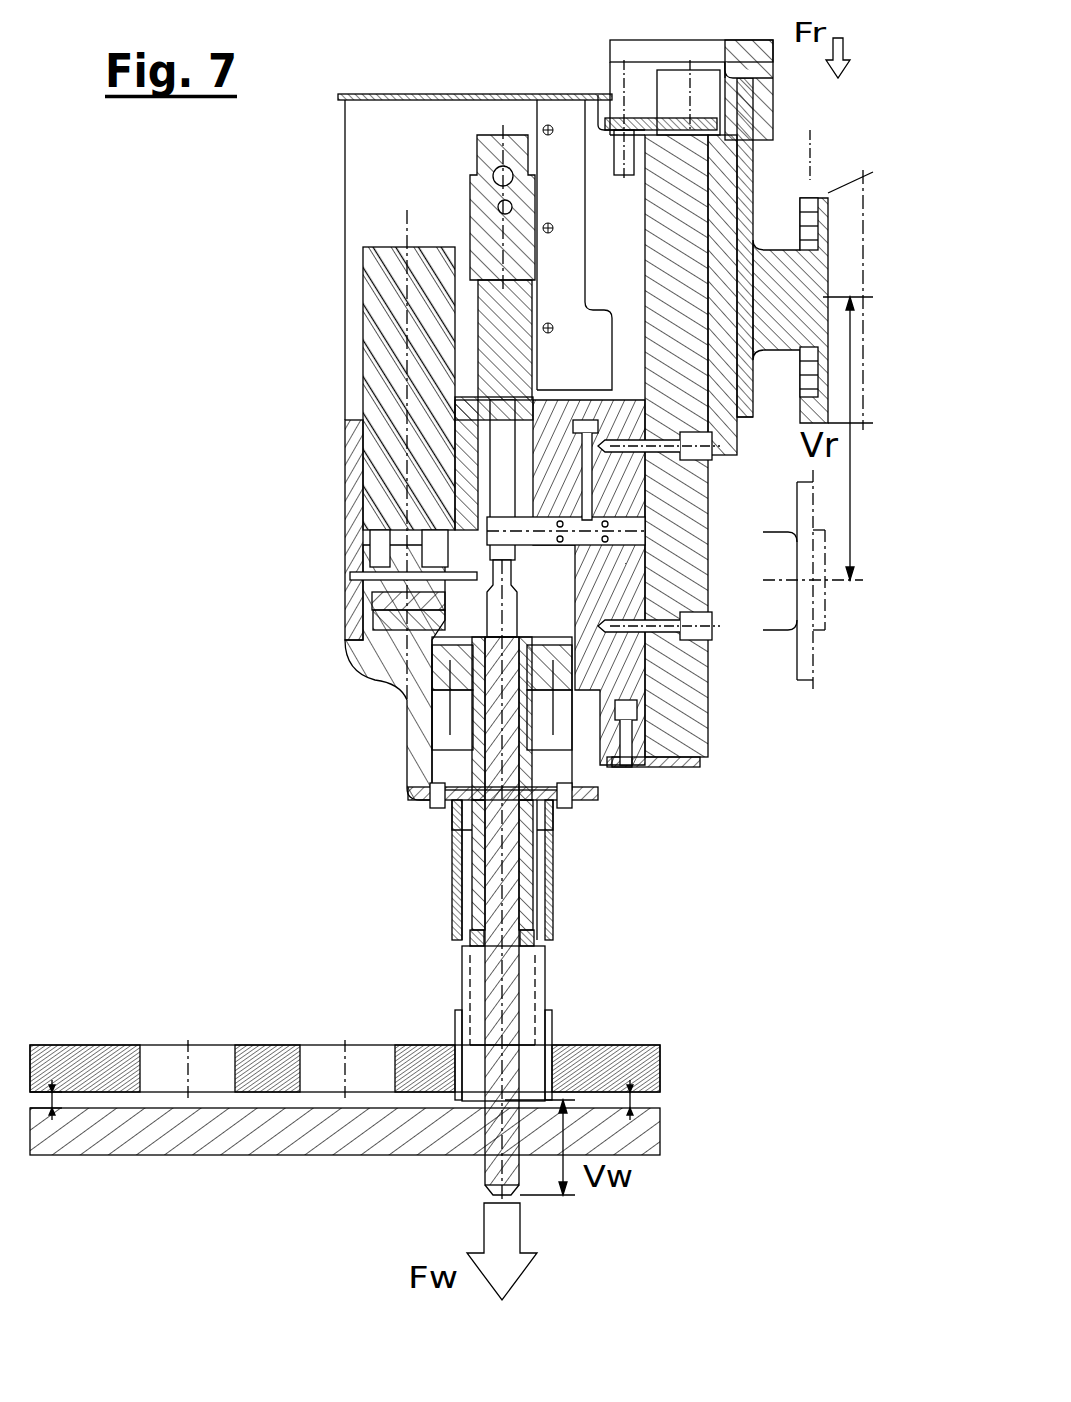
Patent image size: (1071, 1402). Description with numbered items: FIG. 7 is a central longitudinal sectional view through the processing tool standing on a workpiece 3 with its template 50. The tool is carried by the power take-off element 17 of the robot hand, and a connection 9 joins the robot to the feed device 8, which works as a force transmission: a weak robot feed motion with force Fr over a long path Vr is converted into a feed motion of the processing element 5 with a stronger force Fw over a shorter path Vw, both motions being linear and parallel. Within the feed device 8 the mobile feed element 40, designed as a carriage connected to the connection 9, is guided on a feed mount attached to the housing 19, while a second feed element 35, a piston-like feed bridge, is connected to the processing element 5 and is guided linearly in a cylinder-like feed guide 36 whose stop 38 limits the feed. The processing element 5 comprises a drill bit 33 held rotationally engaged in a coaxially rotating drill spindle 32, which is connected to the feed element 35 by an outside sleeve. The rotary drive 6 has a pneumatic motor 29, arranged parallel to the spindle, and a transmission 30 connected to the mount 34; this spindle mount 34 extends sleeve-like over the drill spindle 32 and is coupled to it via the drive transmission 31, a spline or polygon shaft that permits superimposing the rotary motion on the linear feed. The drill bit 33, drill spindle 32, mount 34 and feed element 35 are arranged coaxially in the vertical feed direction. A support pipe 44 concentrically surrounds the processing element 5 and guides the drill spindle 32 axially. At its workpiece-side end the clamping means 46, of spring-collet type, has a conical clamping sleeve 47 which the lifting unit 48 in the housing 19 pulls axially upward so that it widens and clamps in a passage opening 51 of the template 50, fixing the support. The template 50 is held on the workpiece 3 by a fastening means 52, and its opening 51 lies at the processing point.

The workpiece 3 is at (295, 1150).
The processing element 5 is at (520, 975).
The drive 6 is at (352, 372).
The feed device 8 is at (695, 780).
The connection 9 is at (803, 247).
The power take-off element 17 is at (860, 185).
The housing 19 is at (383, 96).
The motor 29 is at (373, 305).
The transmission 30 is at (367, 587).
The drive transmission 31 is at (490, 768).
The drill spindle 32 is at (470, 888).
The drill bit 33 is at (510, 885).
The mount 34 is at (487, 625).
The feed element 35 is at (445, 668).
The feed guide 36 is at (612, 762).
The stop 38 is at (565, 823).
The feed element 40 is at (690, 680).
The support pipe 44 is at (460, 935).
The clamping means 46 is at (468, 246).
The clamping sleeve 47 is at (450, 1045).
The lifting unit 48 is at (493, 135).
The template 50 is at (90, 1045).
The passage opening 51 is at (330, 1048).
The fastening means 52 is at (640, 1100).